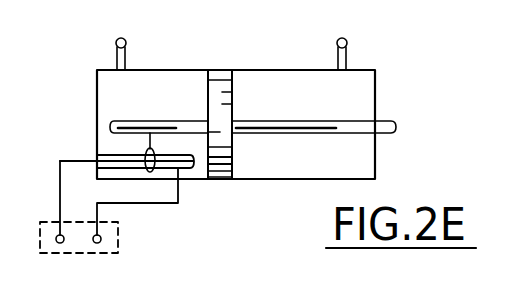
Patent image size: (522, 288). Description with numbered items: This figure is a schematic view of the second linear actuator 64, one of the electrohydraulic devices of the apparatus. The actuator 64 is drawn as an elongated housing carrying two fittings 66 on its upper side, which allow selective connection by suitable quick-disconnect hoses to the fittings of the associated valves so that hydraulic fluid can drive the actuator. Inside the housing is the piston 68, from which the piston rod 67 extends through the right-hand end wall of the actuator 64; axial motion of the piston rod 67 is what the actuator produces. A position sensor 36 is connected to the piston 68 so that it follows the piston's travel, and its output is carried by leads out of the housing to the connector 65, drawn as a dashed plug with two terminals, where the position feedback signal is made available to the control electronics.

The position sensor 36 is at (162, 212).
The second linear actuator 64 is at (251, 68).
The connector 65 is at (101, 258).
The fittings 66 is at (126, 43).
The piston rod 67 is at (384, 120).
The piston 68 is at (224, 182).